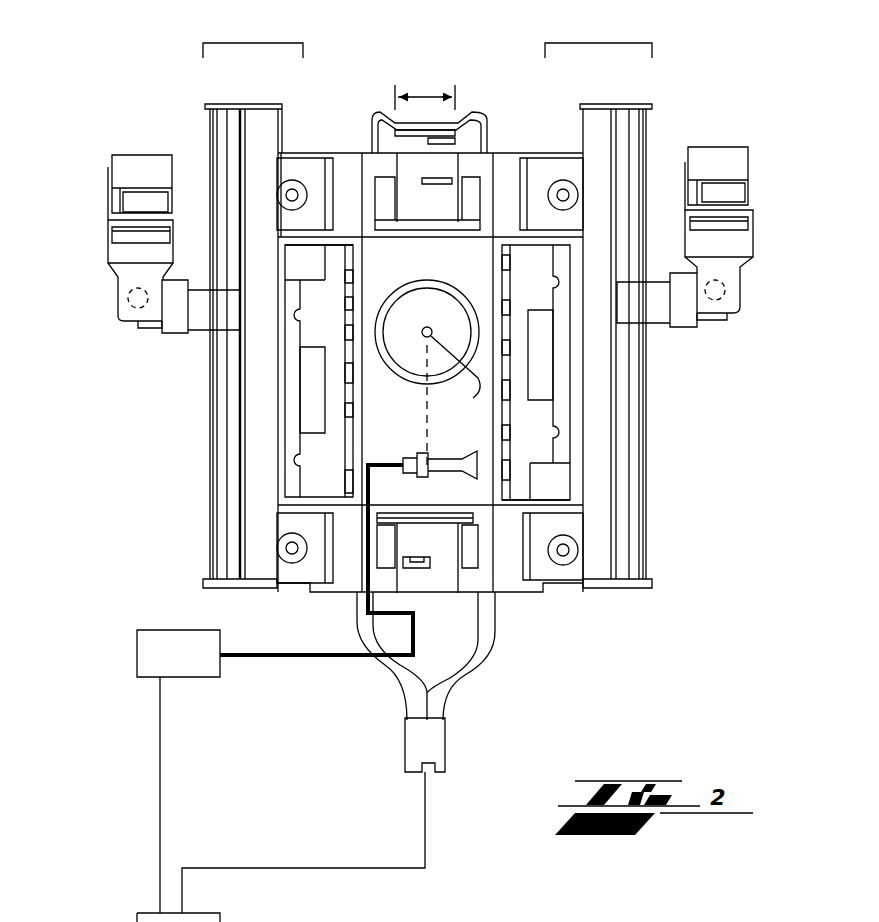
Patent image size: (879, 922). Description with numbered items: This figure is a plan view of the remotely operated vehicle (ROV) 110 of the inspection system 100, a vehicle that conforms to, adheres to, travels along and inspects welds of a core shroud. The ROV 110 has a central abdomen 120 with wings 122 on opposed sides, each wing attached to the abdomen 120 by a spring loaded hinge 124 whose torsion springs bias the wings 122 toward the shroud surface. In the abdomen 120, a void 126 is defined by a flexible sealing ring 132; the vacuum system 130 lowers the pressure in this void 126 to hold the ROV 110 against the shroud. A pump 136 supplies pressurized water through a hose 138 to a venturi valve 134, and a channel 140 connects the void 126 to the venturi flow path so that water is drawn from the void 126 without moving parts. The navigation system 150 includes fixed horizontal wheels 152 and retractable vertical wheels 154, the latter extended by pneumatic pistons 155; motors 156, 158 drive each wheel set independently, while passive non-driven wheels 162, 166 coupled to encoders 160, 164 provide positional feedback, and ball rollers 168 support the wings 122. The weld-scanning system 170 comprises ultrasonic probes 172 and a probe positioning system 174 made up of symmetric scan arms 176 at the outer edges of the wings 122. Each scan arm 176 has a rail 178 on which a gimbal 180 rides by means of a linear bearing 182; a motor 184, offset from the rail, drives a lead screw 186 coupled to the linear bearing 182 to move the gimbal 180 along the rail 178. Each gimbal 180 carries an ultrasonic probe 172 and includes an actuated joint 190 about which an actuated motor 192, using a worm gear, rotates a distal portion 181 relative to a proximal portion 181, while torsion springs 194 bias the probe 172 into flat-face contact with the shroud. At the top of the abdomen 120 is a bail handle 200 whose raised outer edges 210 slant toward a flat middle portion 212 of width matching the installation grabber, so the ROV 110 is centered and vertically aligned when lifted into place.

The inspection system 100 is at (188, 55).
The remotely operated vehicle (ROV) 110 is at (712, 18).
The abdomen 120 is at (537, 58).
The wings 122 is at (252, 43).
The spring loaded hinge 124 is at (312, 153).
The void 126 is at (412, 323).
The vacuum system 130 is at (130, 666).
The sealing ring 132 is at (472, 298).
The venturi valve 134 is at (448, 543).
The pump 136 is at (162, 666).
The hose 138 is at (222, 657).
The channel 140 is at (382, 426).
The navigation system 150 is at (503, 563).
The horizontal wheels 152 is at (380, 190).
The vertical wheels 154 is at (358, 312).
The pneumatic pistons 155 is at (300, 382).
The motor 156 is at (412, 213).
The motor 158 is at (345, 437).
The encoder 160 is at (476, 185).
The non-driven wheels 162 is at (428, 178).
The encoder 164 is at (298, 263).
The non-driven wheels 166 is at (337, 258).
The ball rollers 168 is at (280, 190).
The weld-scanning system 170 is at (148, 128).
The ultrasonic probes 172 is at (122, 184).
The probe positioning system 174 is at (127, 406).
The scan arms 176 is at (136, 474).
The rail 178 is at (225, 548).
The gimbal 180 is at (92, 291).
The distal portion / proximal portion of the gimbal 181 is at (114, 266).
The linear bearing 182 is at (199, 321).
The motor 184 is at (210, 583).
The lead screw 186 is at (213, 540).
The actuated joint 190 is at (133, 305).
The actuated motor 192 is at (143, 328).
The torsion springs 194 is at (108, 233).
The bail handle 200 is at (383, 110).
The raised outer edges 210 is at (490, 108).
The flat middle portion 212 is at (437, 158).